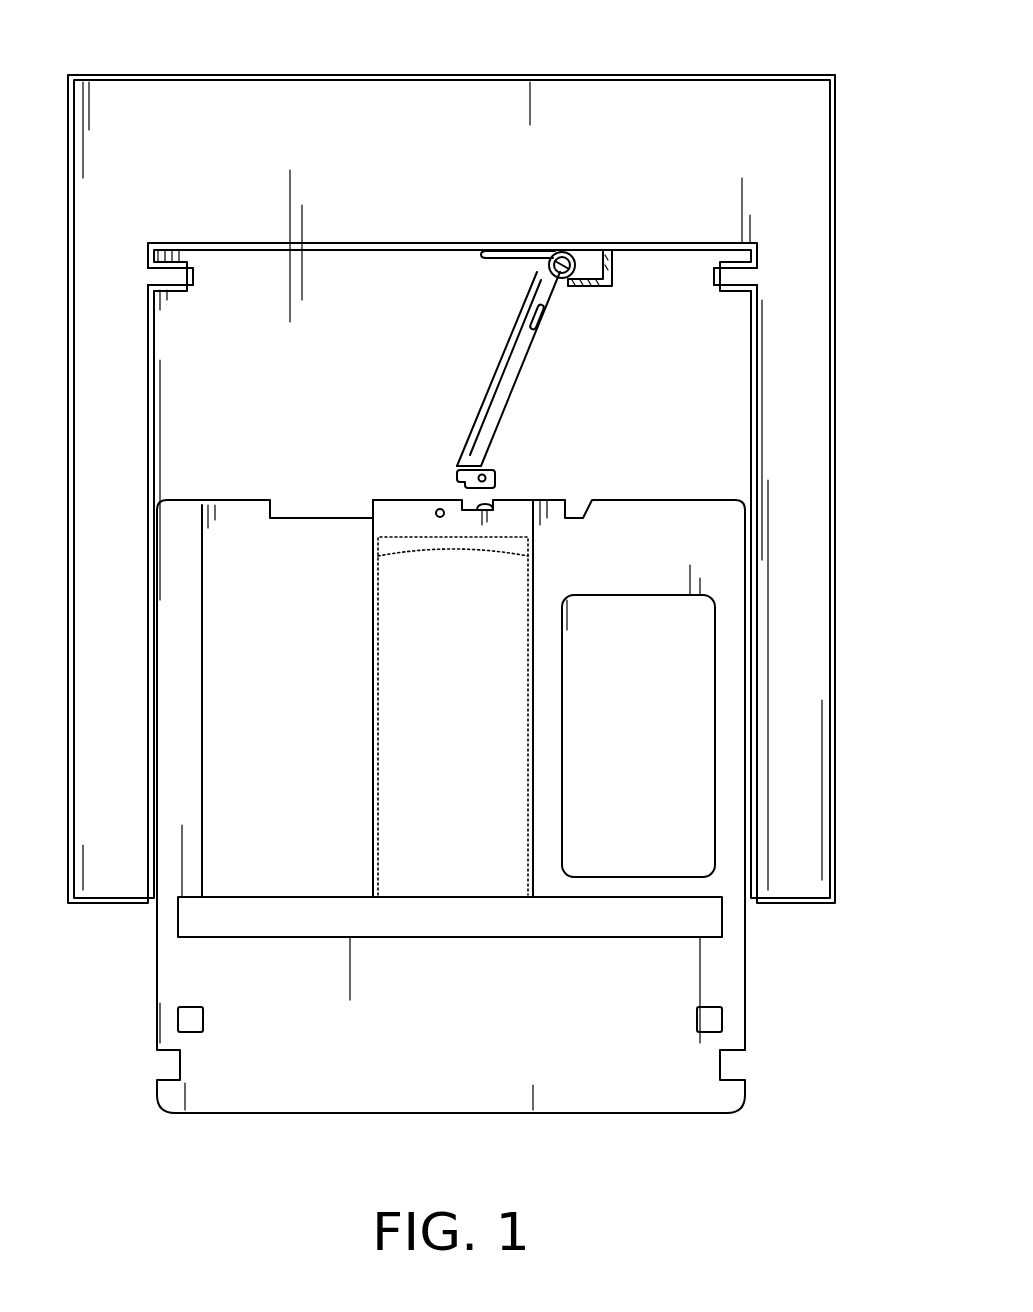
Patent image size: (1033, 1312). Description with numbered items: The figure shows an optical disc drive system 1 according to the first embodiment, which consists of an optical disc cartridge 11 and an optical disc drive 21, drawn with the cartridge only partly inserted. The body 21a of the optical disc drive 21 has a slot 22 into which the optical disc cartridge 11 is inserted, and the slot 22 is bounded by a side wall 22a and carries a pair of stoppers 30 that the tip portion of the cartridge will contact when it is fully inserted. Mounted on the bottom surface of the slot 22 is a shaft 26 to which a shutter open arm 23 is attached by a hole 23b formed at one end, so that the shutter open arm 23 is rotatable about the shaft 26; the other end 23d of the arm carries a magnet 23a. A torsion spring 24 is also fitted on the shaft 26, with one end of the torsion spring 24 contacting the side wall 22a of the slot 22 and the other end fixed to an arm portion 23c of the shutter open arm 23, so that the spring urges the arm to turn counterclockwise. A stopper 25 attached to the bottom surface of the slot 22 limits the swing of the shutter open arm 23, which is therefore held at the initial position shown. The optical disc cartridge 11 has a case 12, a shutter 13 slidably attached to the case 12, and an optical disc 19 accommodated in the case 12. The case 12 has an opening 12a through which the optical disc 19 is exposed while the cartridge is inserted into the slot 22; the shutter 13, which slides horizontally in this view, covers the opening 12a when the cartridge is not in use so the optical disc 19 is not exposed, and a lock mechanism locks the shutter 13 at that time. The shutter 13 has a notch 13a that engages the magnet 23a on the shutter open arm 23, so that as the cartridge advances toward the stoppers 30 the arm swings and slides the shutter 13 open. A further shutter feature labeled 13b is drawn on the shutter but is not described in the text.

The optical disc drive system 1 is at (70, 928).
The optical disc cartridge 11 is at (388, 1115).
The case 12 is at (743, 1015).
The opening 12a is at (410, 535).
The shutter 13 is at (370, 660).
The notch 13a is at (493, 508).
The shutter hole 13b is at (444, 518).
The optical disc 19 is at (505, 745).
The optical disc drive 21 is at (764, 70).
The body 21a is at (830, 194).
The slot 22 is at (687, 222).
The side wall 22a is at (357, 246).
The shutter open arm 23 is at (464, 376).
The magnet 23a is at (495, 472).
The hole 23b is at (550, 279).
The arm portion 23c is at (510, 369).
The other end 23d is at (459, 460).
The torsion spring 24 is at (544, 318).
The stopper 25 is at (613, 283).
The shaft 26 is at (578, 251).
The stoppers 30 is at (186, 280).